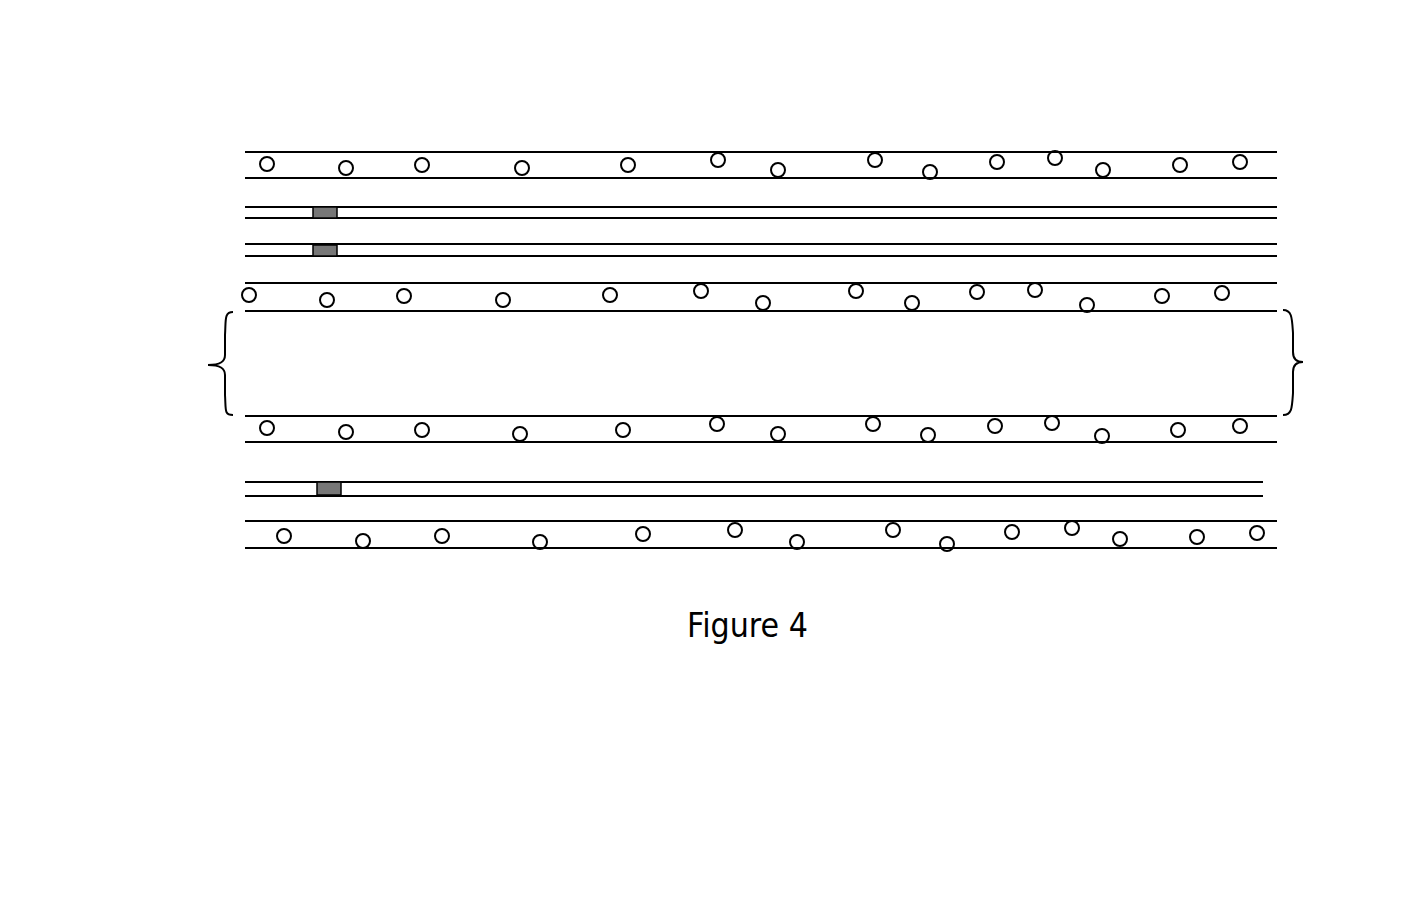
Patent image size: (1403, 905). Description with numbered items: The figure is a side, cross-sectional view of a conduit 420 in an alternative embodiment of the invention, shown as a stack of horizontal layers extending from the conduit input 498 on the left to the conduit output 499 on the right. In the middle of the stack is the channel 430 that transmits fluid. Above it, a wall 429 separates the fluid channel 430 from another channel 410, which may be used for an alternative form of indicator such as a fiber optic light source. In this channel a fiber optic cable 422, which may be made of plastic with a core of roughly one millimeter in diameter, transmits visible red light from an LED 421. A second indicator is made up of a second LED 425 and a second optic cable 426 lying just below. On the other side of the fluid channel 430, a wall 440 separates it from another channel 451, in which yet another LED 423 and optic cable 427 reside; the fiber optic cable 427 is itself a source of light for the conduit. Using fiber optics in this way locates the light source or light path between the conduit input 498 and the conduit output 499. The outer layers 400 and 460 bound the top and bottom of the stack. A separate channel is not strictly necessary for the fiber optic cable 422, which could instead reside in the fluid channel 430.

The top cover layer 400 is at (1277, 163).
The channel 410 is at (775, 152).
The conduit 420 is at (572, 84).
The LED 421 is at (245, 217).
The fiber optic cable 422 is at (905, 207).
The LED 423 is at (240, 490).
The second LED 425 is at (245, 254).
The second optic cable 426 is at (1060, 243).
The optic cable 427 is at (1148, 496).
The wall 429 is at (1290, 295).
The channel 430 is at (1122, 371).
The wall 440 is at (1277, 428).
The channel 451 is at (744, 538).
The bottom cover layer 460 is at (1275, 531).
The conduit input 498 is at (208, 366).
The conduit output 499 is at (1303, 362).